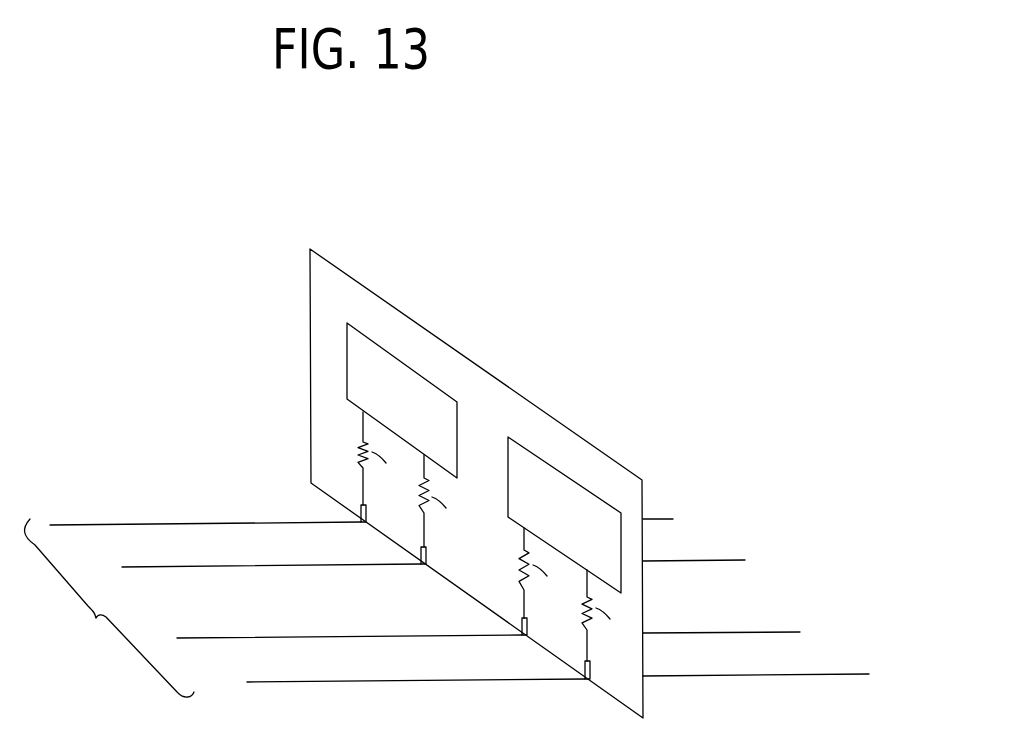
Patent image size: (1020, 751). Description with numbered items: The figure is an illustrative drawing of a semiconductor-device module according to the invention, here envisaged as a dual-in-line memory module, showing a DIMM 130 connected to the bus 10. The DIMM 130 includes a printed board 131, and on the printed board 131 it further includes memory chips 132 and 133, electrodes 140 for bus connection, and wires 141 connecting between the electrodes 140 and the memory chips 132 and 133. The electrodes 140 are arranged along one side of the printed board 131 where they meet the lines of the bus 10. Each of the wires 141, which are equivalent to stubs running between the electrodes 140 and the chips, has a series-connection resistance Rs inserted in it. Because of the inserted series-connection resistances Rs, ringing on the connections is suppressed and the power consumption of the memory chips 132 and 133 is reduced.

The bus 10 is at (447, 608).
The DIMM 130 is at (448, 466).
The printed board 131 is at (528, 401).
The memory chip 132 is at (412, 368).
The memory chip 133 is at (557, 470).
The electrode 140 is at (361, 510).
The wire 141 is at (585, 638).